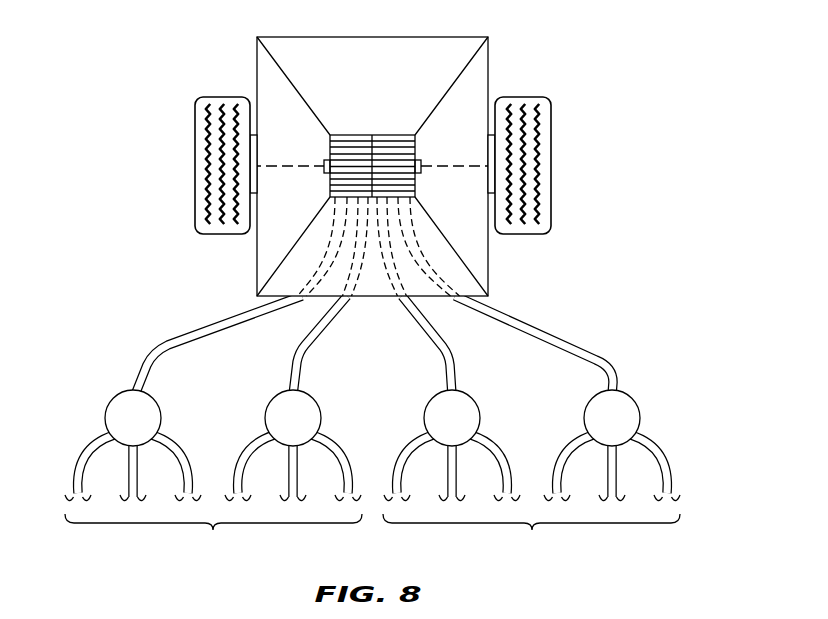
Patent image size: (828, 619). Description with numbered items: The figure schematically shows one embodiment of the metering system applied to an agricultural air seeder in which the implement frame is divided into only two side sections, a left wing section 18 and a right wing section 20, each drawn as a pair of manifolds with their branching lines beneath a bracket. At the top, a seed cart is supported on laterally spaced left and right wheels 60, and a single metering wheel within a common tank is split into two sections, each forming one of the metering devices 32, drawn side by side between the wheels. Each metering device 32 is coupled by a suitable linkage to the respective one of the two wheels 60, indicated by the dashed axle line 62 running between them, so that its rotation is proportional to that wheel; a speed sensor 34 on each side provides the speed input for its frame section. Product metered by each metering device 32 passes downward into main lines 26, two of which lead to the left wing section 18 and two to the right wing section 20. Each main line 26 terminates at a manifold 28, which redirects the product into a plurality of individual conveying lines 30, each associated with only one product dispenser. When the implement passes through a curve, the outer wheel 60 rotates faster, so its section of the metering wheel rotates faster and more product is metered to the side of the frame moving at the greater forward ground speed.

The left wing section 18 is at (213, 536).
The right wing section 20 is at (531, 536).
The main line 26 is at (188, 334).
The manifold 28 is at (108, 403).
The individual conveying line 30 is at (660, 453).
The metering device 32 is at (355, 123).
The speed sensor 34 is at (258, 136).
The wheel 60 is at (195, 165).
The axle 62 is at (290, 168).